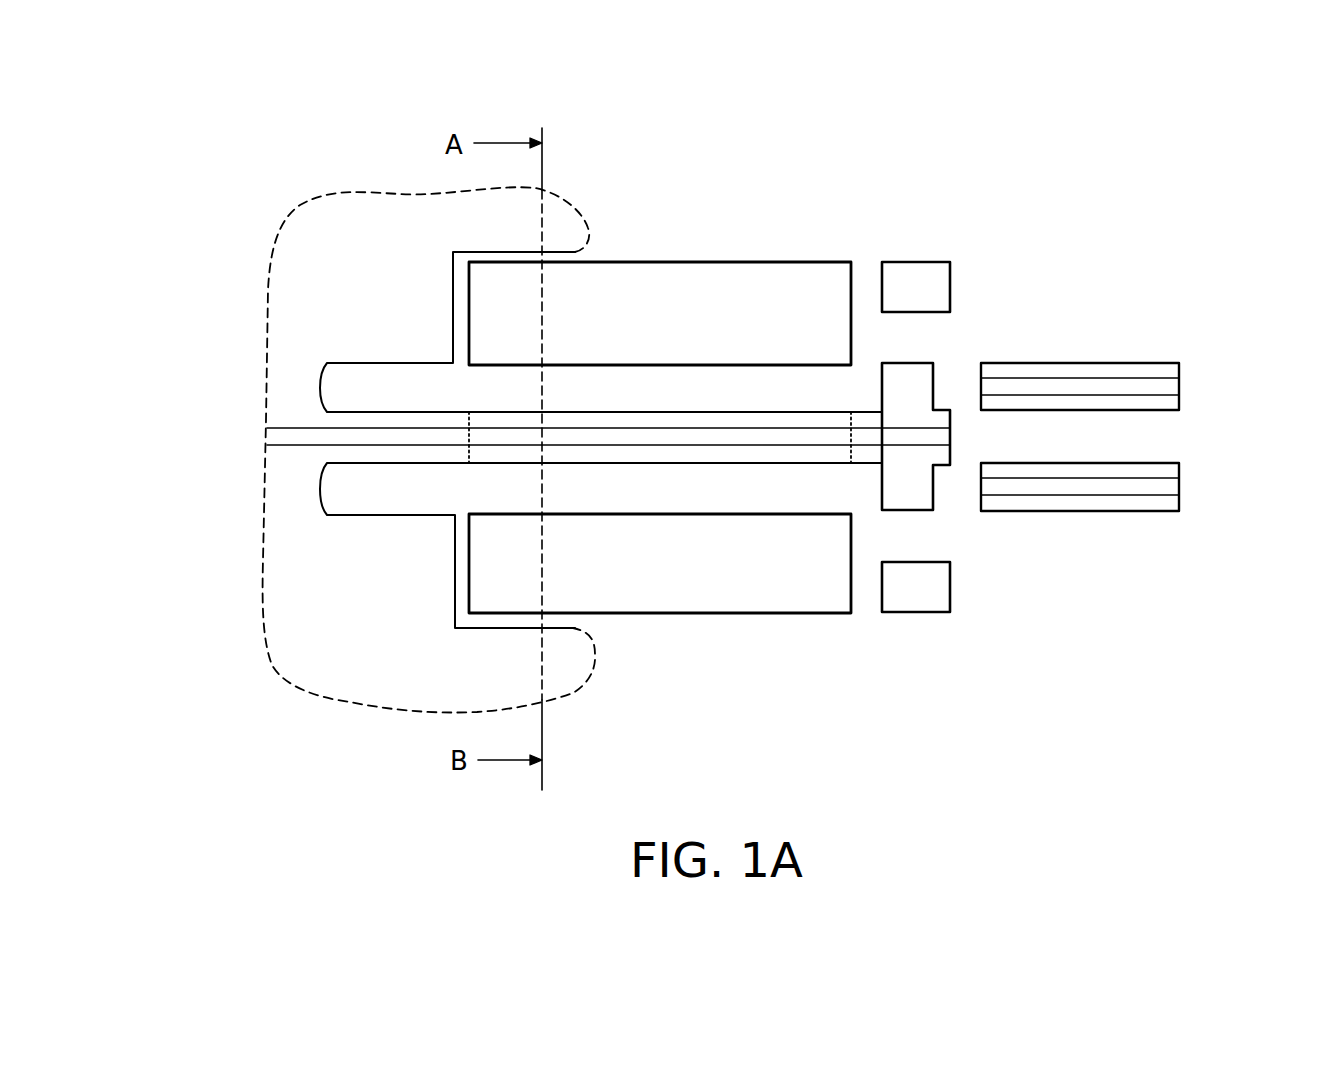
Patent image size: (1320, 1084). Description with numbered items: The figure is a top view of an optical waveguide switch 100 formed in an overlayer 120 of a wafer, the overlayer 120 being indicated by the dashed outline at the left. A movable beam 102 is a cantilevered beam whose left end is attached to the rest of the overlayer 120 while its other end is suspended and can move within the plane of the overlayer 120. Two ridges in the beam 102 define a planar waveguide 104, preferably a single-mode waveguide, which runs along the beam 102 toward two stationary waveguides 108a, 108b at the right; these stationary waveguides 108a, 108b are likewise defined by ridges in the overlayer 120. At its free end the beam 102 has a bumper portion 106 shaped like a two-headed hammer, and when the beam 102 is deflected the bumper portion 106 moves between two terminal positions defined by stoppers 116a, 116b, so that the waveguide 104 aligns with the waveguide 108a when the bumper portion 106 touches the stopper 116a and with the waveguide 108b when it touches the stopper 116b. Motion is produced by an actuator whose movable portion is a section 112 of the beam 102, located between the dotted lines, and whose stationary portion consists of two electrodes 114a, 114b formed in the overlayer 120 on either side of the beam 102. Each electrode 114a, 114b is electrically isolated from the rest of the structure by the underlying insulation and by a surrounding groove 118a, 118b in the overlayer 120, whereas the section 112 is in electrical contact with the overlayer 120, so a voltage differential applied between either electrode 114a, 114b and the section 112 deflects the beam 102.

The optical waveguide switch 100 is at (247, 738).
The movable beam 102 is at (961, 535).
The planar waveguide 104 is at (697, 438).
The bumper portion 106 is at (920, 375).
The stationary waveguide 108a is at (1181, 385).
The stationary waveguide 108b is at (1181, 485).
The section 112 is at (497, 478).
The electrode 114a is at (712, 282).
The electrode 114b is at (748, 592).
The stopper 116a is at (910, 273).
The stopper 116b is at (900, 597).
The groove 118a is at (460, 374).
The groove 118b is at (595, 624).
The overlayer 120 is at (283, 603).